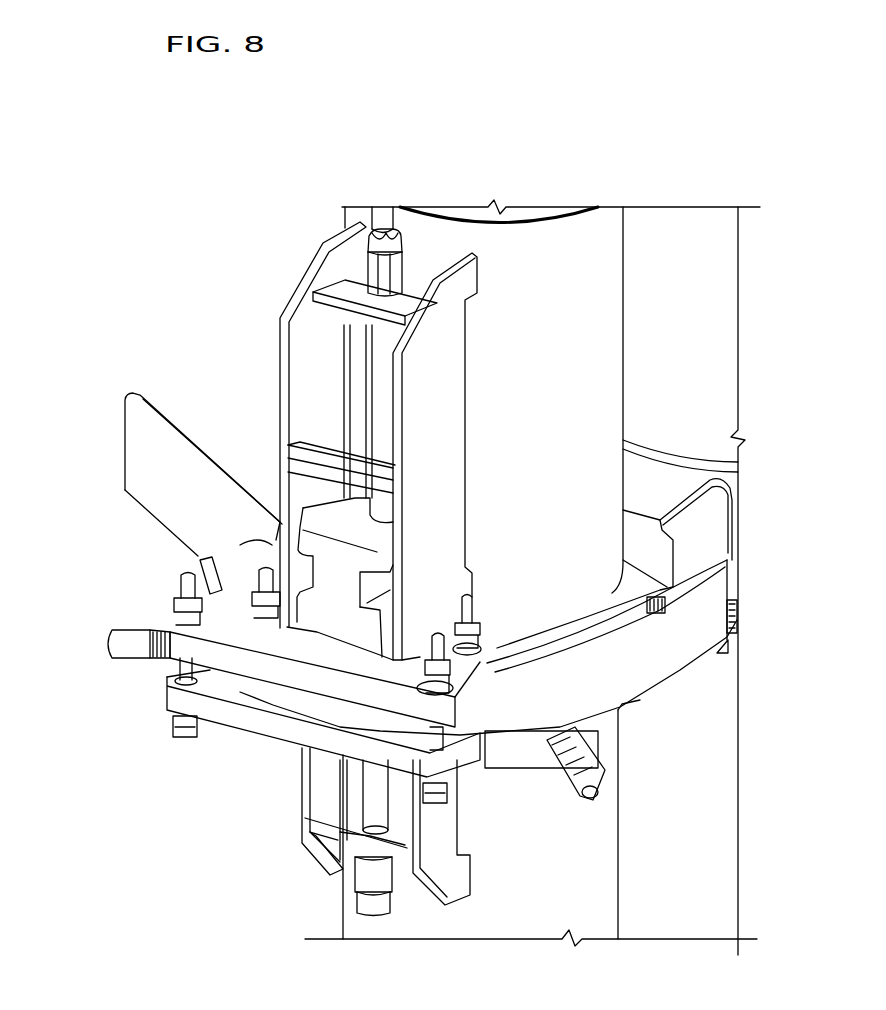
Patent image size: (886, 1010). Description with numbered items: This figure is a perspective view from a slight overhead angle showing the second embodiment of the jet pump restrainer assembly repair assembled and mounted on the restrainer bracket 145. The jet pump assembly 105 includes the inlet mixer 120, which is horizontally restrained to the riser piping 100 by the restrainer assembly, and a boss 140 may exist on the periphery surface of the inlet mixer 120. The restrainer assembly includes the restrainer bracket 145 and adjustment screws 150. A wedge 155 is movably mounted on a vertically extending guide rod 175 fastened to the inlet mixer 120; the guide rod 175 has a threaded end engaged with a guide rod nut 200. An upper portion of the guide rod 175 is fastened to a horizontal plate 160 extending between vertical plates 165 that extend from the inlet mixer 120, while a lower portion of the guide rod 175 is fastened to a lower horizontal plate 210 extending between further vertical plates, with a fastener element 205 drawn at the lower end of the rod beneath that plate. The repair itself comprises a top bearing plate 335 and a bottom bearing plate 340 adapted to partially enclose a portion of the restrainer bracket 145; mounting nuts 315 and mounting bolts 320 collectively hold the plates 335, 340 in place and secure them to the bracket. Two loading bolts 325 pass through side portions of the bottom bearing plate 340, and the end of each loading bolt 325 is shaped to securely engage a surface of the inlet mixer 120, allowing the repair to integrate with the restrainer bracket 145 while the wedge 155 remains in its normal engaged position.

The riser piping 100 is at (665, 213).
The jet pump assembly 105 is at (455, 212).
The inlet mixer 120 is at (430, 203).
The boss 140 is at (603, 611).
The restrainer bracket 145 is at (620, 717).
The adjustment screws 150 is at (667, 590).
The wedge 155 is at (320, 525).
The horizontal plate 160 is at (337, 290).
The vertical plates 165 is at (293, 290).
The guide rod 175 is at (373, 375).
The guide rod nut 200 is at (367, 222).
The bolt 205 is at (392, 848).
The horizontal plate 210 is at (300, 850).
The mounting nuts 315 is at (267, 545).
The mounting bolts 320 is at (185, 740).
The loading bolts 325 is at (108, 638).
The top bearing plate 335 is at (190, 653).
The bottom bearing plate 340 is at (227, 713).